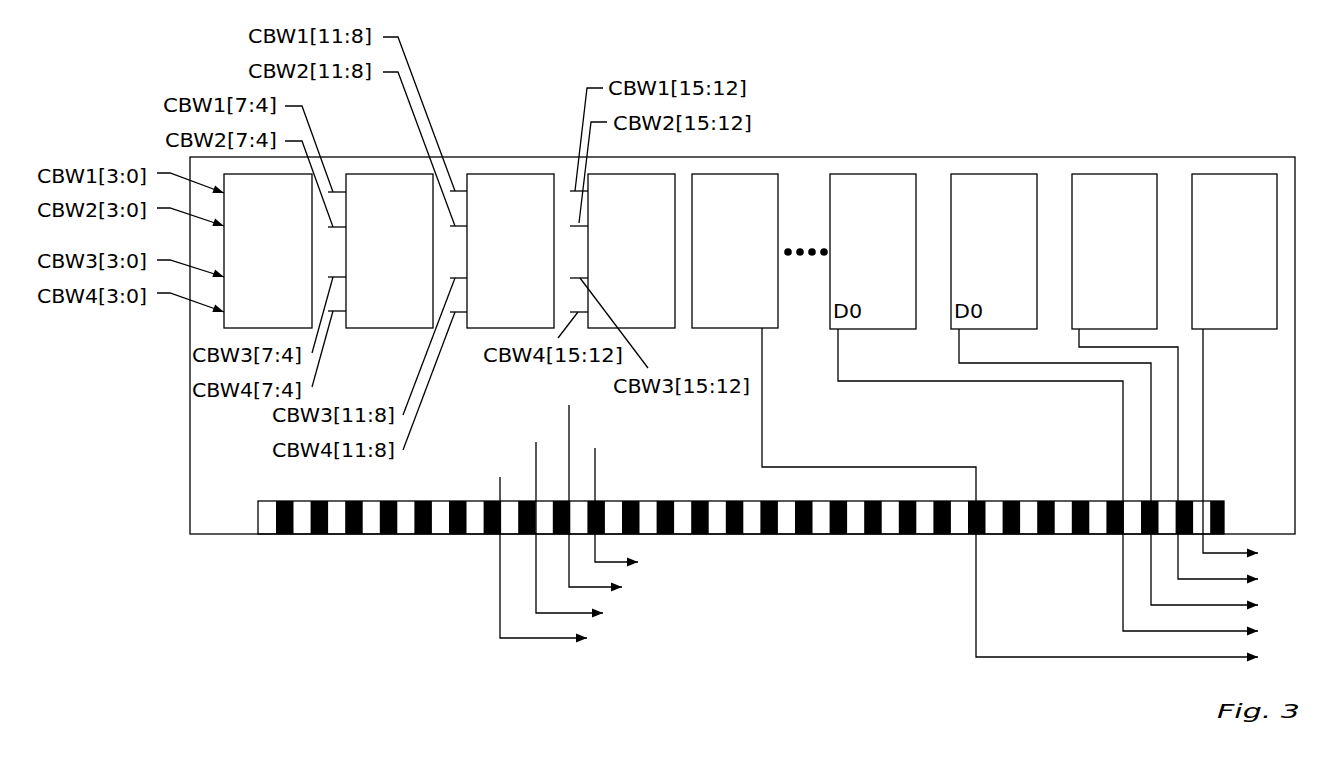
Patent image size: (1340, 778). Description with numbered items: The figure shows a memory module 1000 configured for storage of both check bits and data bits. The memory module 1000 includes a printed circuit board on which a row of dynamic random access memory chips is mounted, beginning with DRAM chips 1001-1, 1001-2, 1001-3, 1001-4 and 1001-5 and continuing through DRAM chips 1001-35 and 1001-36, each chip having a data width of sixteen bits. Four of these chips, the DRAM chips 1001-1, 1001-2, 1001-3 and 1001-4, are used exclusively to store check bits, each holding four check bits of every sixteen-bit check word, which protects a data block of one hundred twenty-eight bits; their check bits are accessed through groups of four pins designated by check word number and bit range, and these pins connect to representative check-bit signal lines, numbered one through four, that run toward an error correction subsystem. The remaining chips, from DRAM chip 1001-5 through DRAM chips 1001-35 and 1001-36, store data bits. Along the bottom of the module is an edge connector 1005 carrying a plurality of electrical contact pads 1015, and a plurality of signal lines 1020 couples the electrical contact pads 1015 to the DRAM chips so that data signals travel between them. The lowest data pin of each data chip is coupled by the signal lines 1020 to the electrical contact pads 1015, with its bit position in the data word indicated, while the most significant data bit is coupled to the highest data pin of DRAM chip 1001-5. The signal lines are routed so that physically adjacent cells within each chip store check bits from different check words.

The memory module 1000 is at (849, 49).
The DRAM chip 1001-1 is at (305, 202).
The DRAM chip 1001-2 is at (426, 202).
The DRAM chip 1001-3 is at (547, 202).
The DRAM chip 1001-4 is at (668, 202).
The DRAM chip 1001-5 is at (773, 202).
The DRAM chip 1001-35 is at (1115, 172).
The DRAM chip 1001-36 is at (1235, 172).
The edge connector 1005 is at (363, 535).
The electrical contact pads 1015 is at (467, 535).
The signal lines 1020 is at (569, 485).